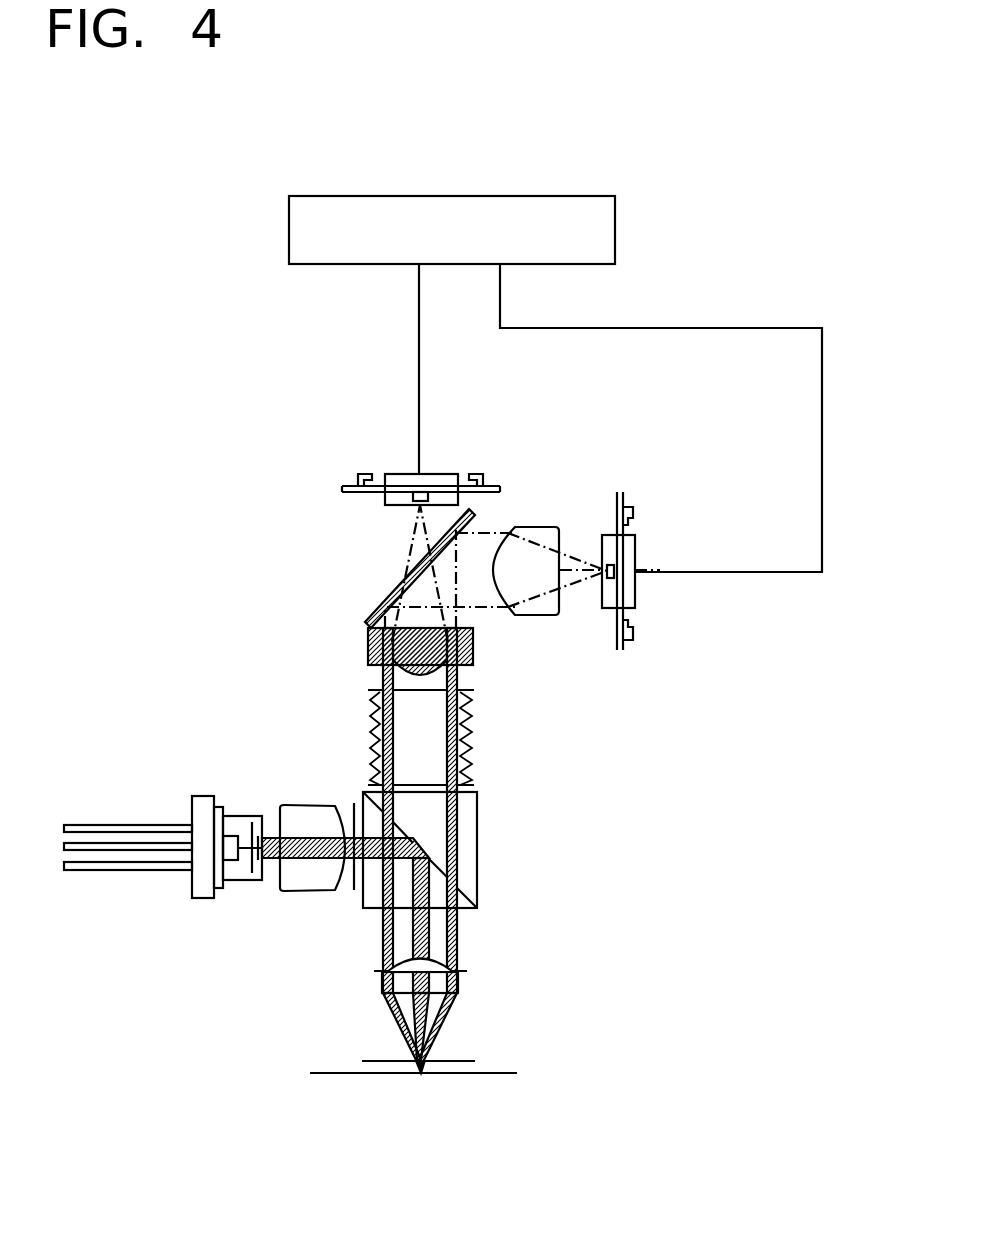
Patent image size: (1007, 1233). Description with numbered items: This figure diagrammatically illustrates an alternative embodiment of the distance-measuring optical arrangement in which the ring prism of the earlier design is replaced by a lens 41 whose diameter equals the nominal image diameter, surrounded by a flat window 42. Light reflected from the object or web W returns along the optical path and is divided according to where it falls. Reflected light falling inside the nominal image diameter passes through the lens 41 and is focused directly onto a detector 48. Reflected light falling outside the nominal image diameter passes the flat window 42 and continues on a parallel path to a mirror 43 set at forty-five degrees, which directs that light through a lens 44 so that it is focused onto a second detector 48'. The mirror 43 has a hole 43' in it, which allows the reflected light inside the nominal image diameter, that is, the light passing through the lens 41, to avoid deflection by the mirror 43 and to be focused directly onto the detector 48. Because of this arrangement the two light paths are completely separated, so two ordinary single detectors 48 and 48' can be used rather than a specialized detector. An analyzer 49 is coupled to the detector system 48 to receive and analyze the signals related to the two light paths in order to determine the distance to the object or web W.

The analyzer 49 is at (621, 236).
The detector 48 is at (398, 426).
The second detector 48' is at (682, 572).
The 45° mirror 43 is at (499, 534).
The hole 43' is at (474, 573).
The lens 44 is at (541, 618).
The flat window 42 is at (479, 641).
The lens 41 is at (471, 701).
The wafer W is at (303, 1074).